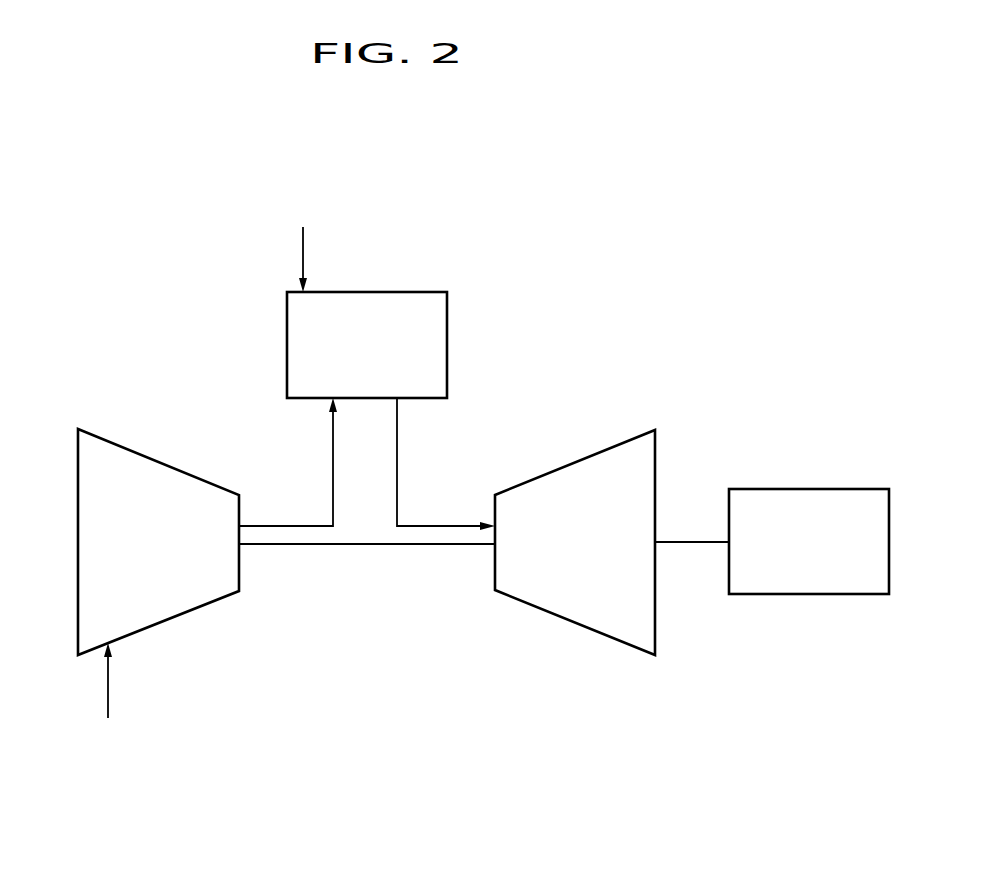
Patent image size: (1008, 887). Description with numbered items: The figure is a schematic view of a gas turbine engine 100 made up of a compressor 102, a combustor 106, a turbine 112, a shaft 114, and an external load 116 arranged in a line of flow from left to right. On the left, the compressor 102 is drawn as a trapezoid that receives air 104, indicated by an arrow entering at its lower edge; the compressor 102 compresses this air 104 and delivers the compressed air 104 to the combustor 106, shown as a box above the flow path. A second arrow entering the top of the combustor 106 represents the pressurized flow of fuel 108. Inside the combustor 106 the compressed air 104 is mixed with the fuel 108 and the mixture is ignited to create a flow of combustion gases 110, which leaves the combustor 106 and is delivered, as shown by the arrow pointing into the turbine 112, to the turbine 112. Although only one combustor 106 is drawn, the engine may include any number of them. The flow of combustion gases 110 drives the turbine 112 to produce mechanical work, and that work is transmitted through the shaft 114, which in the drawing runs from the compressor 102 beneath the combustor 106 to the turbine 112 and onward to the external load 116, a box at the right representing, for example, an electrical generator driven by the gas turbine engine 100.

The gas turbine engine 100 is at (165, 347).
The compressor 102 is at (190, 612).
The air 104 is at (108, 702).
The combustor 106 is at (447, 312).
The fuel 108 is at (303, 248).
The combustion gases 110 is at (430, 525).
The turbine 112 is at (620, 645).
The shaft 114 is at (688, 540).
The external load 116 is at (816, 597).